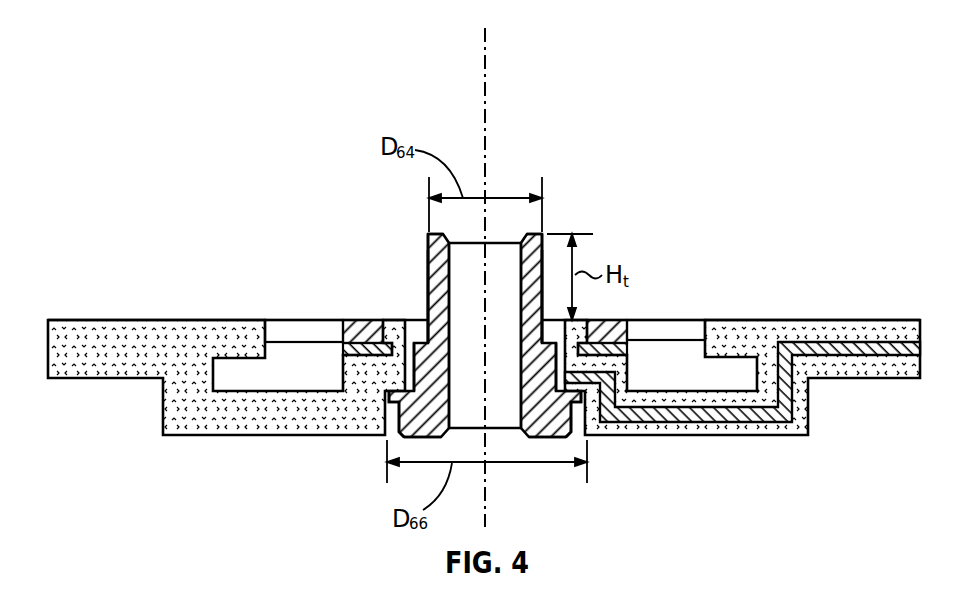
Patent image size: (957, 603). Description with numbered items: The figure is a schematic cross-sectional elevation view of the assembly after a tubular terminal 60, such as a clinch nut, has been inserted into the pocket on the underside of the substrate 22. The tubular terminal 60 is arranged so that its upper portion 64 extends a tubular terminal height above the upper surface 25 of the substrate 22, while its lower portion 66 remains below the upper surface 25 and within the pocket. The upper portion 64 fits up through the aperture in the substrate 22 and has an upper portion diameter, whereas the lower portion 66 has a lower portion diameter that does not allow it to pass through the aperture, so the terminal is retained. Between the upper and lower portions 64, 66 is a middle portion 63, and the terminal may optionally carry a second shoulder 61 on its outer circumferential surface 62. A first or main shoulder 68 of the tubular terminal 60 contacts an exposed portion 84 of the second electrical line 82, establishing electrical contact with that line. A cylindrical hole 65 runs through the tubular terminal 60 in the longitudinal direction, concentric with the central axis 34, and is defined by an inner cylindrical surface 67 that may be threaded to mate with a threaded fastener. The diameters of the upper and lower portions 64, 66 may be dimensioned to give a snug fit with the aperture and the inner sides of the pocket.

The substrate 22 is at (123, 337).
The upper surface 25 is at (193, 320).
The central axis 34 is at (487, 86).
The tubular terminal 60 is at (427, 243).
The second shoulder 61 is at (424, 332).
The outer circumferential surface 62 is at (427, 267).
The middle portion 63 is at (415, 366).
The upper portion 64 is at (438, 285).
The cylindrical hole 65 is at (406, 295).
The lower portion 66 is at (412, 405).
The inner cylindrical surface 67 is at (518, 275).
The main shoulder 68 is at (579, 402).
The second electrical line 82 is at (838, 343).
The exposed portion 84 is at (600, 348).